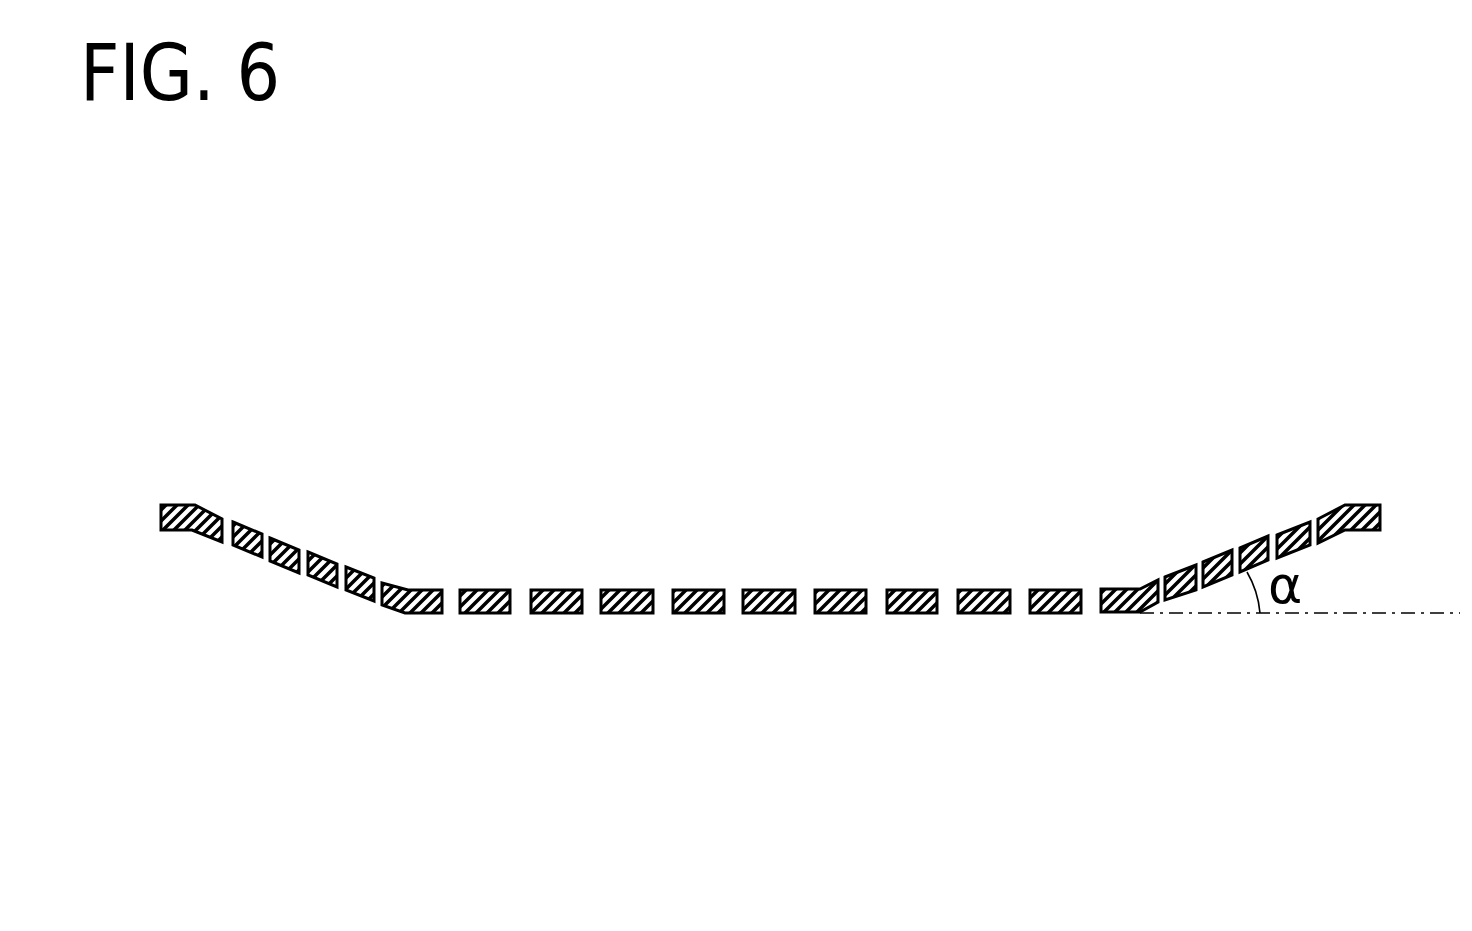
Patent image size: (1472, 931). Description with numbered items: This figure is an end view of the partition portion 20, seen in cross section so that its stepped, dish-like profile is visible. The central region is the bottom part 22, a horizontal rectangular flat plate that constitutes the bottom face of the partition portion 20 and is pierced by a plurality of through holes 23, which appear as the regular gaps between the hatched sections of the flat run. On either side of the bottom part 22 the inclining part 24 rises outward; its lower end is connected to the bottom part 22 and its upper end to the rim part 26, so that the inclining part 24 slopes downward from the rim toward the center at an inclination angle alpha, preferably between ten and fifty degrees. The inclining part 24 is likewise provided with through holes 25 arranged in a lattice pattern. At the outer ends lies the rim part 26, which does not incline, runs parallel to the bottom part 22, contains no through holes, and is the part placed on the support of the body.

The partition portion 20 is at (998, 243).
The bottom part 22 is at (773, 606).
The through holes 23 is at (655, 600).
The inclining part 24 is at (324, 585).
The through holes 25 is at (268, 547).
The rim part 26 is at (1366, 506).